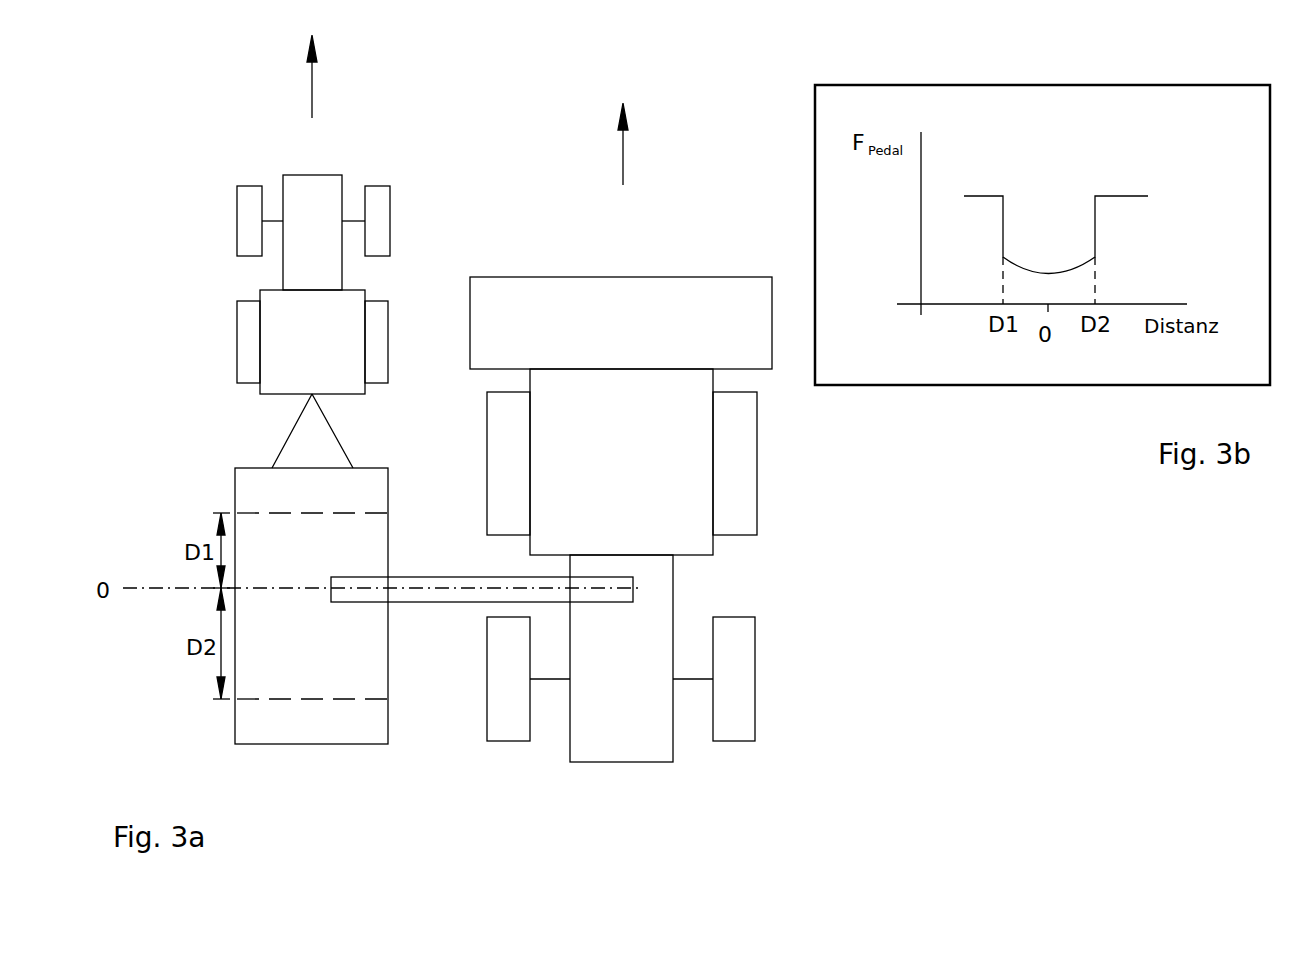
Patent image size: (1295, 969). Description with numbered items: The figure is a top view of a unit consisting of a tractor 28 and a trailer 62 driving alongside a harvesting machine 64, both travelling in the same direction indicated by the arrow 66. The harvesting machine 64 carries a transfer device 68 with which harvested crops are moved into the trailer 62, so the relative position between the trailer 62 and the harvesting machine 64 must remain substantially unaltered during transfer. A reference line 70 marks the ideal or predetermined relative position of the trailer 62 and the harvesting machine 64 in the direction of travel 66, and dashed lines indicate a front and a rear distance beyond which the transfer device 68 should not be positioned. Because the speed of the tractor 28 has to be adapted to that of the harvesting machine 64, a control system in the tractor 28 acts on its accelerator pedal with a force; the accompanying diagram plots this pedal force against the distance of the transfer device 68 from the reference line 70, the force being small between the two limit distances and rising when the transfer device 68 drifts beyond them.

The tractor 28 is at (215, 274).
The trailer 62 is at (199, 510).
The harvesting machine 64 is at (787, 542).
The arrow 66 is at (312, 101).
The transfer device 68 is at (425, 577).
The reference line 70 is at (153, 590).